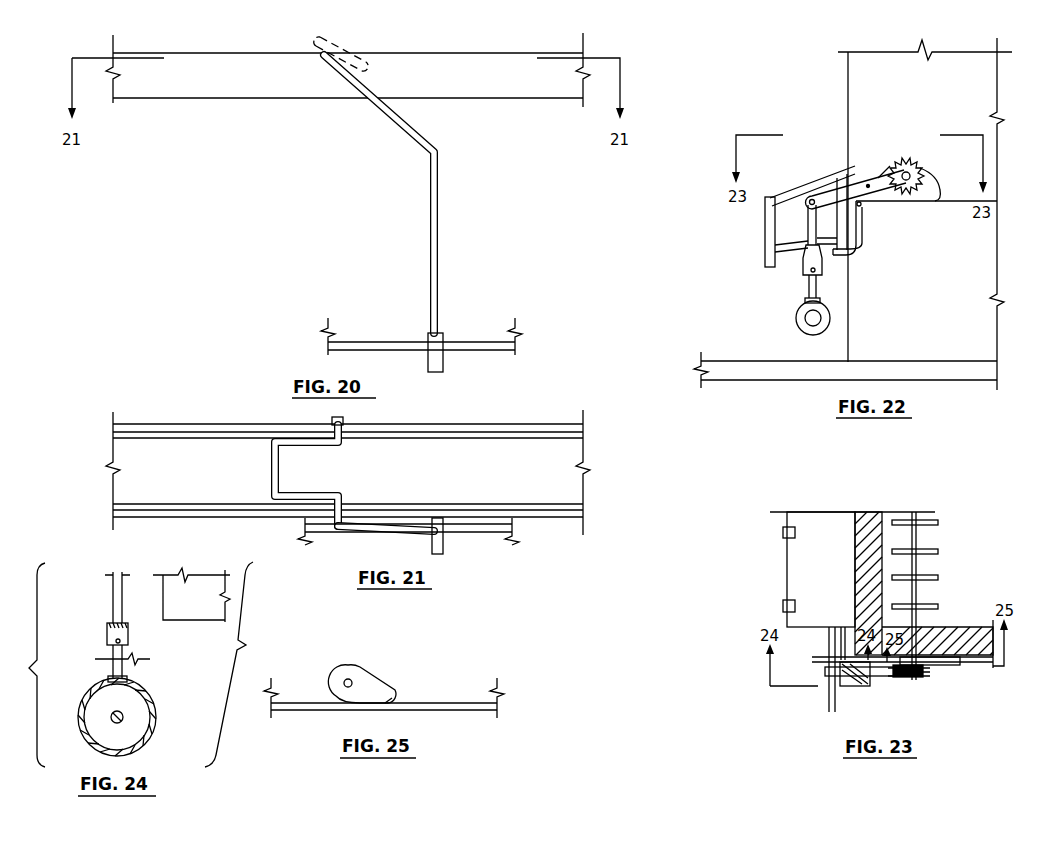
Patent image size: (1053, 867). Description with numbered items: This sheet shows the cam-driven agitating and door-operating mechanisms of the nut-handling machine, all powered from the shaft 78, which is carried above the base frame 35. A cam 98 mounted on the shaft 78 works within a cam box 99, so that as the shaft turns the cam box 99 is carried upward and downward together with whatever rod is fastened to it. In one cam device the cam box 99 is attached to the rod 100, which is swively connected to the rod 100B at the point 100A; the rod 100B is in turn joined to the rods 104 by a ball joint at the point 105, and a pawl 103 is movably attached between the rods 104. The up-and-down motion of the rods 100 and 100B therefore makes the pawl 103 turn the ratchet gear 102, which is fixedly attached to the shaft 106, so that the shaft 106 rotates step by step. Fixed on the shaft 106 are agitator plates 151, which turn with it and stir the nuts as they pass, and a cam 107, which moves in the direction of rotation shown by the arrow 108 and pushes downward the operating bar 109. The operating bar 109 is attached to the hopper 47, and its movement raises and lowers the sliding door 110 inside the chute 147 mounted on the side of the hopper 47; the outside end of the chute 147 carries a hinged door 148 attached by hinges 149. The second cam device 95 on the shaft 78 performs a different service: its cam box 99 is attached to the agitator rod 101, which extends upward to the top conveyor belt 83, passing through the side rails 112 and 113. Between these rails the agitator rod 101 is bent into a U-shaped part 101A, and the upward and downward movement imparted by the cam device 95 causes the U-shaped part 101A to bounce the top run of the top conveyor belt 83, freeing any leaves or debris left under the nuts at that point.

In FIG. 22, the base frame 35 is at (762, 381).
In FIG. 24, the hopper 47 is at (224, 620).
In FIG. 23, the hopper 47 is at (868, 526).
In FIG. 20, the shaft 78 is at (340, 345).
In FIG. 21, the shaft 78 is at (338, 535).
In FIG. 24, the shaft 78 is at (111, 715).
In FIG. 23, the shaft 78 is at (829, 699).
In FIG. 21, the top conveyor belt 83 is at (560, 488).
In FIG. 20, the second cam device 95 is at (443, 360).
In FIG. 21, the second cam device 95 is at (444, 548).
In FIG. 24, the cam 98 is at (140, 714).
In FIG. 24, the cam box 99 is at (155, 730).
In FIG. 22, the cam box 99 is at (831, 321).
In FIG. 24, the rod 100 is at (108, 668).
In FIG. 22, the rod 100 is at (801, 294).
In FIG. 24, the swivel connection point 100A is at (107, 641).
In FIG. 22, the swivel connection point 100A is at (806, 270).
In FIG. 24, the rod 100B is at (113, 592).
In FIG. 22, the rod 100B is at (808, 234).
In FIG. 23, the rod 100B is at (825, 673).
In FIG. 20, the agitator rod 101 is at (440, 298).
In FIG. 21, the agitator rod 101 is at (428, 537).
In FIG. 20, the U-shaped part 101A is at (312, 58).
In FIG. 21, the U-shaped part 101A is at (272, 471).
In FIG. 22, the ratchet gear 102 is at (909, 163).
In FIG. 23, the ratchet gear 102 is at (918, 672).
In FIG. 22, the pawl 103 is at (874, 172).
In FIG. 23, the pawl 103 is at (895, 680).
In FIG. 22, the rods 104 is at (856, 182).
In FIG. 23, the rods 104 is at (858, 684).
In FIG. 22, the ball joint connection point 105 is at (811, 198).
In FIG. 25, the shaft 106 is at (346, 681).
In FIG. 22, the shaft 106 is at (886, 190).
In FIG. 23, the shaft 106 is at (918, 538).
In FIG. 25, the cam 107 is at (385, 686).
In FIG. 22, the cam 107 is at (935, 195).
In FIG. 23, the cam 107 is at (955, 666).
In FIG. 25, the arrow 108 is at (386, 706).
In FIG. 25, the operating bar 109 is at (455, 706).
In FIG. 22, the operating bar 109 is at (858, 215).
In FIG. 23, the operating bar 109 is at (828, 659).
In FIG. 22, the sliding door 110 is at (842, 178).
In FIG. 20, the side rail 112 is at (537, 80).
In FIG. 21, the side rail 112 is at (205, 512).
In FIG. 21, the side rail 113 is at (466, 430).
In FIG. 23, the chute 147 is at (806, 526).
In FIG. 22, the hinged door 148 is at (765, 257).
In FIG. 22, the hinges 149 is at (765, 207).
In FIG. 23, the hinges 149 is at (783, 605).
In FIG. 23, the agitator plates 151 is at (928, 522).